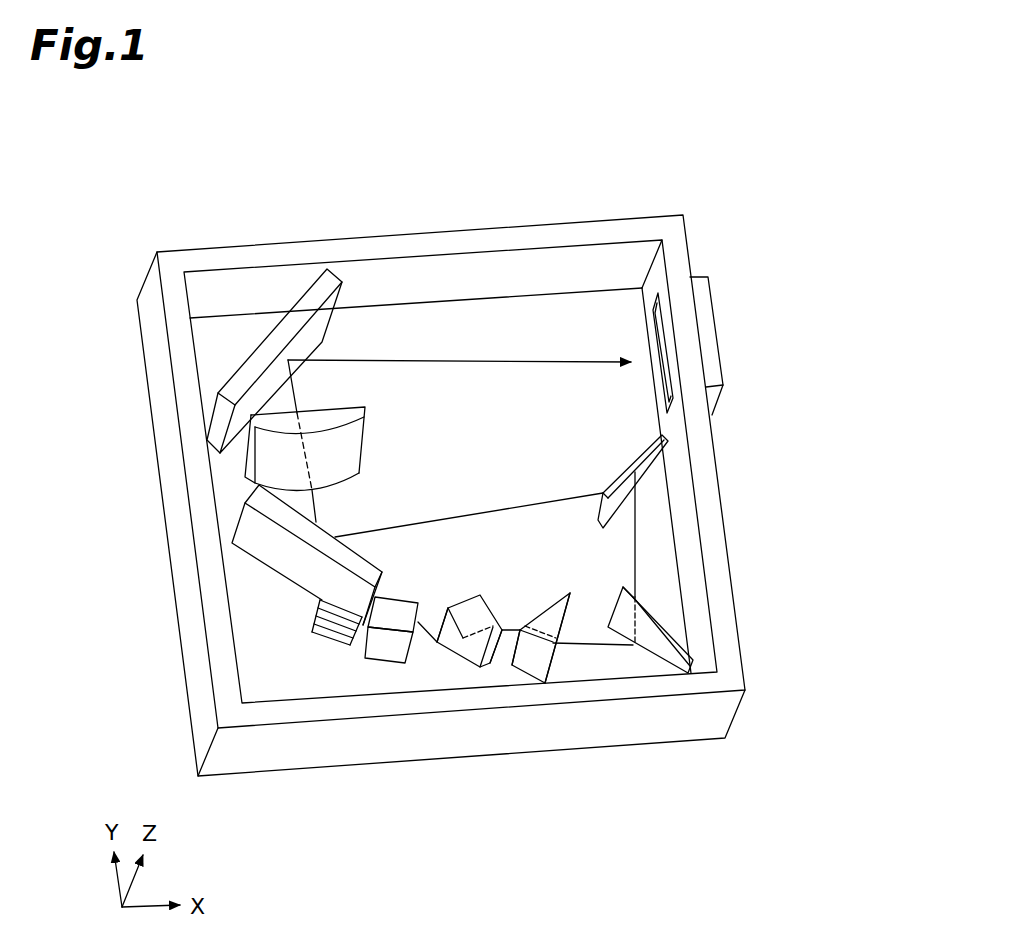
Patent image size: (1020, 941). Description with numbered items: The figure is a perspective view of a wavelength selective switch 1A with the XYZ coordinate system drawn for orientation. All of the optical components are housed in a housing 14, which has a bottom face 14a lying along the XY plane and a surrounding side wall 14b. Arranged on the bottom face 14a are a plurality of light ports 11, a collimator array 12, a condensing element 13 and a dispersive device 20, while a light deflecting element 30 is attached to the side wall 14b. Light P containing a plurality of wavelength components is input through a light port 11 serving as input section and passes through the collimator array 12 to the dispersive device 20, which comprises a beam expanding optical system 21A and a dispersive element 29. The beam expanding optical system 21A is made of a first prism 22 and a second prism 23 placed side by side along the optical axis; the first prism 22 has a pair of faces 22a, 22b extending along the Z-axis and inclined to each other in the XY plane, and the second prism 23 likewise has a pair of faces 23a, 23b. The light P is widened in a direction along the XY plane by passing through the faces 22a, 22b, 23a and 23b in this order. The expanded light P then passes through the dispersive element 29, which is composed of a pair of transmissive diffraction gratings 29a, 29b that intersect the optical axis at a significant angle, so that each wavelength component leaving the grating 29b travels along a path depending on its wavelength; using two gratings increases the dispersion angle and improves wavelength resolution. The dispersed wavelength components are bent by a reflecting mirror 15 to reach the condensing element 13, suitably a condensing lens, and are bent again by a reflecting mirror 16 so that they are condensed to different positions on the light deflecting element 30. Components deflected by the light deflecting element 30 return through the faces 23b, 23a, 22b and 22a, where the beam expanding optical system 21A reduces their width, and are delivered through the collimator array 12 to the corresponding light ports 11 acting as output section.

The wavelength selective switch 1A is at (658, 178).
The light ports 11 is at (325, 648).
The collimator array 12 is at (385, 673).
The condensing element 13 is at (370, 437).
The housing 14 is at (473, 475).
The bottom face 14a is at (508, 313).
The side wall 14b is at (700, 437).
The reflecting mirror 15 is at (278, 560).
The reflecting mirror 16 is at (302, 297).
The dispersive device 20 is at (555, 664).
The beam expanding optical system 21A is at (514, 694).
The first prism 22 is at (465, 675).
The face of first prism 22a is at (450, 622).
The face of first prism 22b is at (493, 625).
The second prism 23 is at (555, 675).
The face of second prism 23a is at (532, 618).
The face of second prism 23b is at (570, 620).
The dispersive element 29 is at (628, 646).
The transmissive diffraction grating 29a is at (633, 668).
The transmissive diffraction grating 29b is at (612, 535).
The light deflecting element 30 is at (724, 333).
The light P is at (545, 366).